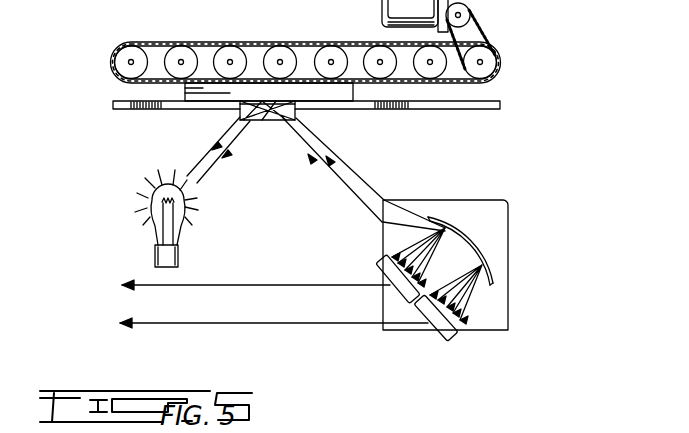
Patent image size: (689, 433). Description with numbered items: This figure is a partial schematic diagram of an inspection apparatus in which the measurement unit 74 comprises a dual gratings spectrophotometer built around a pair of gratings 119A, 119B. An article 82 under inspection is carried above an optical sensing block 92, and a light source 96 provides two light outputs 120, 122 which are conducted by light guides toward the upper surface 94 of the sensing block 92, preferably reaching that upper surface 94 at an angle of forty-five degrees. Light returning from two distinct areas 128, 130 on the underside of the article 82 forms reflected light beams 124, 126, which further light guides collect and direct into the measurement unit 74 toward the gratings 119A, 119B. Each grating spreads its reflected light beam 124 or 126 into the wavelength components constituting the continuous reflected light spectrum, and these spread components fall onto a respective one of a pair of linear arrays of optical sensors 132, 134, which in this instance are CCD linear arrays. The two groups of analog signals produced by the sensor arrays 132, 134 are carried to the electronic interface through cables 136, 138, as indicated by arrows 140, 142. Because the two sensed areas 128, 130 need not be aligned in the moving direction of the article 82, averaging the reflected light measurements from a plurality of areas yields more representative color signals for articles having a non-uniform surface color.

The measurement unit 74 is at (472, 203).
The article 82 is at (323, 90).
The optical sensing block 92 is at (258, 121).
The upper surface 94 is at (287, 122).
The light source 96 is at (153, 234).
The grating 119A is at (450, 236).
The grating 119B is at (484, 275).
The light output 120 is at (196, 172).
The light output 122 is at (200, 176).
The reflected light beam 124 is at (350, 172).
The reflected light beam 126 is at (356, 200).
The area 128 is at (237, 113).
The area 130 is at (296, 113).
The linear array of optical sensors 132 is at (397, 291).
The linear array of optical sensors 134 is at (442, 338).
The cable 136 is at (286, 284).
The cable 138 is at (375, 324).
The arrow 140 is at (127, 287).
The arrow 142 is at (129, 327).